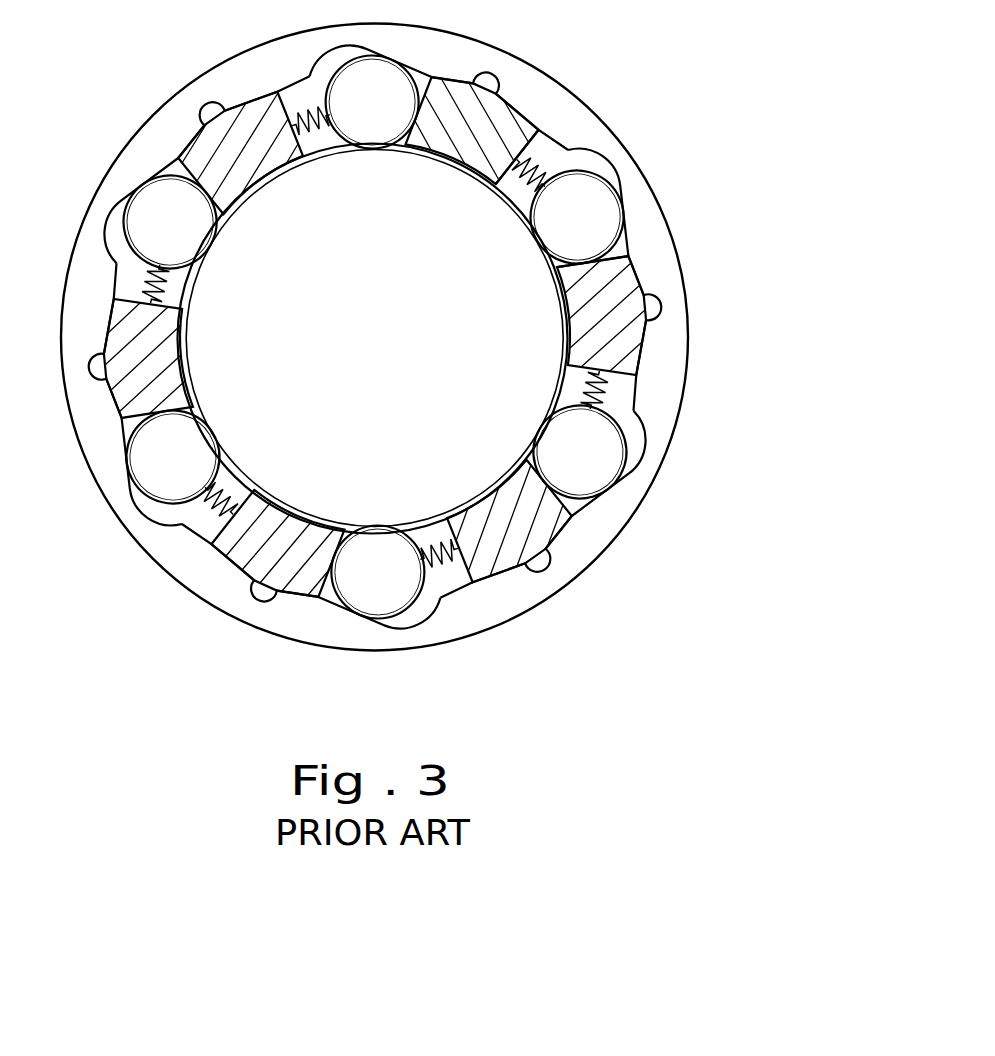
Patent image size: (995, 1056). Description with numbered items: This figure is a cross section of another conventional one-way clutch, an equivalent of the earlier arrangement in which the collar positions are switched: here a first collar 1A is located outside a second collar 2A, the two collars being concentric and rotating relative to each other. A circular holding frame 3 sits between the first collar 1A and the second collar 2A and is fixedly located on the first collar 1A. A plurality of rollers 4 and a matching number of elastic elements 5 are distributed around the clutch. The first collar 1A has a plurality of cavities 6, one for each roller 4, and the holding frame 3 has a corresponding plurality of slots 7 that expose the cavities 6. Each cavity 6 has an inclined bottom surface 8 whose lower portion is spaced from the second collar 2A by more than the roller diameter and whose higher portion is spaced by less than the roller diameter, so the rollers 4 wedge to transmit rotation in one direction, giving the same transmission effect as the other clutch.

The first collar 1A is at (643, 215).
The second collar 2A is at (447, 183).
The circular holding frame 3 is at (612, 352).
The roller 4 is at (570, 215).
The elastic element 5 is at (527, 212).
The cavity 6 is at (583, 163).
The slot 7 is at (510, 185).
The inclined bottom surface 8 is at (630, 250).